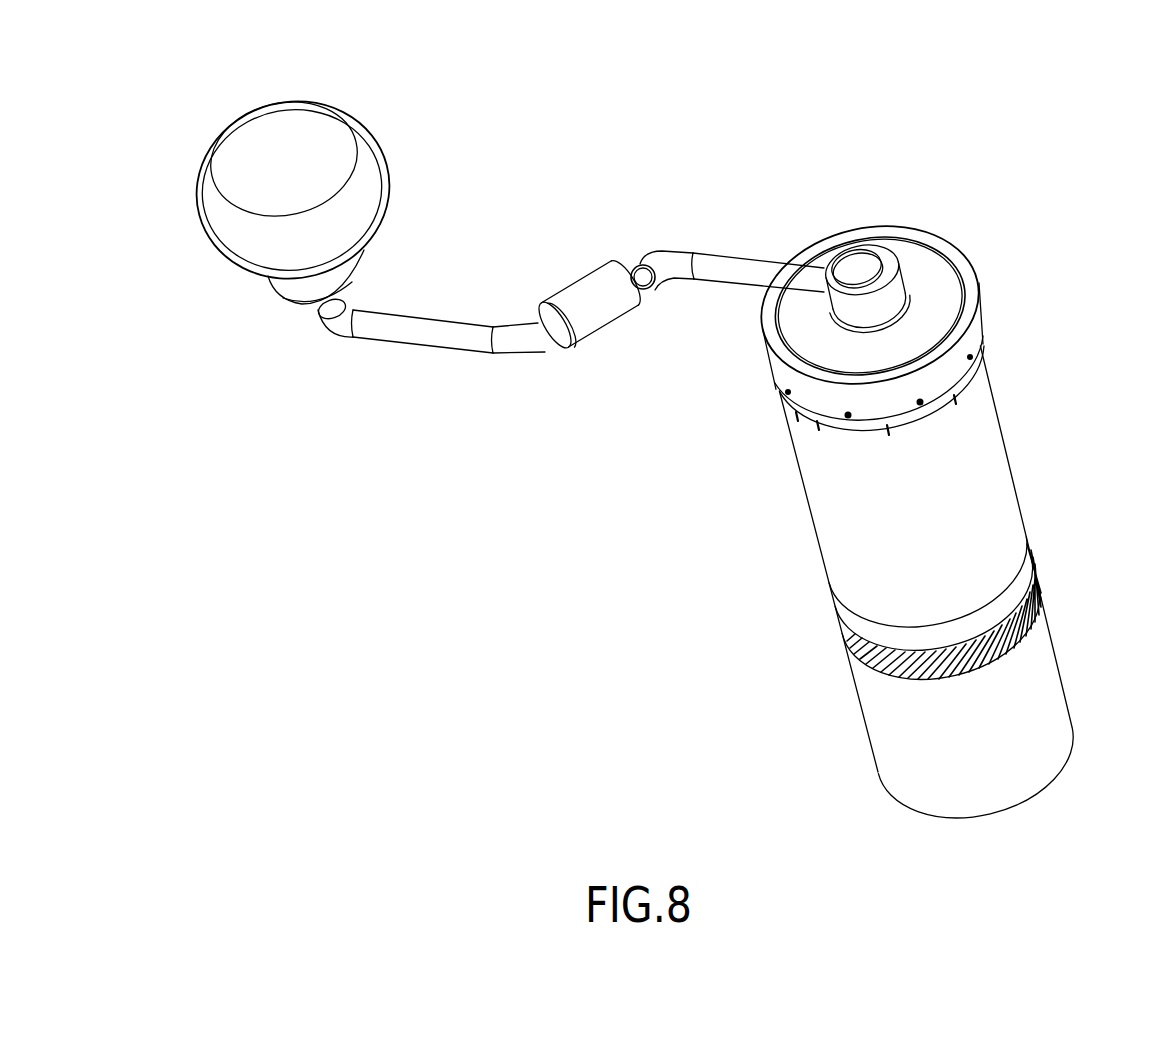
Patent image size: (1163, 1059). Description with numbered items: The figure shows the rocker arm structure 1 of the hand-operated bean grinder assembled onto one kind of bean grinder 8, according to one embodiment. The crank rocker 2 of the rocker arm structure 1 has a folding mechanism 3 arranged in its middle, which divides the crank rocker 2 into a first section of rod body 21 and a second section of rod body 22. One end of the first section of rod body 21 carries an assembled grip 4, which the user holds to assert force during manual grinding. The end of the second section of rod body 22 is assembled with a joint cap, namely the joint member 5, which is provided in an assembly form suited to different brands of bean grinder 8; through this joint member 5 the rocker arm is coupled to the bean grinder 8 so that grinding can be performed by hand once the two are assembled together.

The rocker arm structure 1 is at (607, 130).
The crank rocker 2 is at (378, 617).
The first section of rod body 21 is at (405, 333).
The second section of rod body 22 is at (727, 272).
The folding mechanism 3 is at (575, 292).
The grip 4 is at (317, 163).
The joint member 5 is at (925, 283).
The bean grinder 8 is at (998, 497).